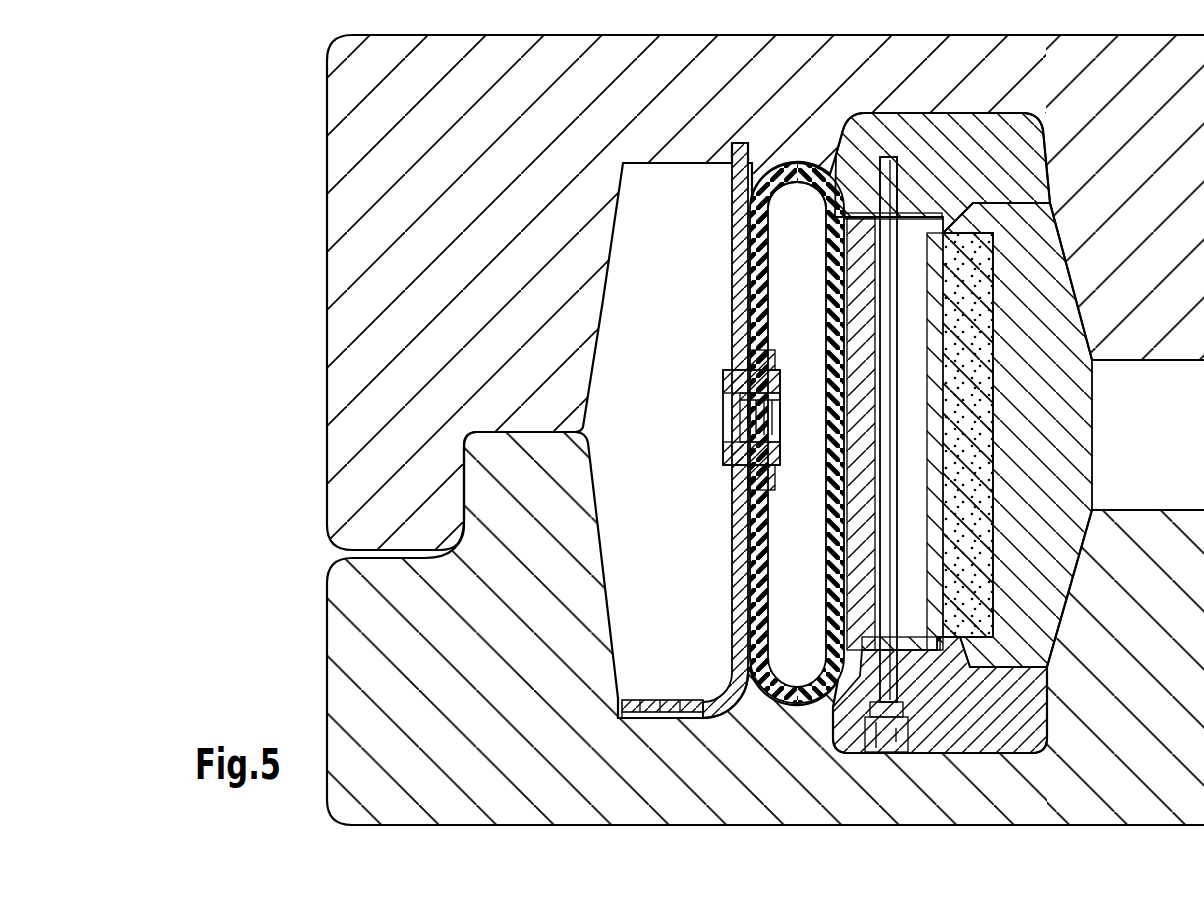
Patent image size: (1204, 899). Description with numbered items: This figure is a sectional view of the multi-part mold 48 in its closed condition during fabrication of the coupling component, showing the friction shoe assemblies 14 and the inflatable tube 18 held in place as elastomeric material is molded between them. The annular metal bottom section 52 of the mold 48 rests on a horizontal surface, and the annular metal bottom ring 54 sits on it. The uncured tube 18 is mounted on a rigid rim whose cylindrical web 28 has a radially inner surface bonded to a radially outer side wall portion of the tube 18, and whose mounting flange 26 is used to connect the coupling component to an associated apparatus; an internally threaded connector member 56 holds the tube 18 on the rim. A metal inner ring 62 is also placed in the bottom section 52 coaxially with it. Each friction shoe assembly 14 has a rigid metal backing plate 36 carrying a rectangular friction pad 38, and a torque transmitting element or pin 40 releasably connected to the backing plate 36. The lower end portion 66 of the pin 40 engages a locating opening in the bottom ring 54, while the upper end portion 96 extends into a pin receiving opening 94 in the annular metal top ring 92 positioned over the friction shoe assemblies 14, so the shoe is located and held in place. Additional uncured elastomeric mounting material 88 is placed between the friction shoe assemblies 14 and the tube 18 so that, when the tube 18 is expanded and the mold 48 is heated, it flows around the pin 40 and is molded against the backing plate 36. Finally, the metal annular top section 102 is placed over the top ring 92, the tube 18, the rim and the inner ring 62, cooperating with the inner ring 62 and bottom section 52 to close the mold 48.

The friction shoe assembly 14 is at (947, 220).
The inflatable tube 18 is at (807, 148).
The mounting flange 26 is at (665, 701).
The cylindrical web 28 is at (745, 287).
The backing plate 36 is at (947, 445).
The friction pad 38 is at (970, 418).
The torque transmitting element 40 is at (880, 580).
The multi-part mold 48 is at (452, 843).
The bottom section 52 is at (763, 793).
The bottom ring 54 is at (975, 720).
The connector member 56 is at (723, 455).
The inner ring 62 is at (1072, 485).
The lower end portion 66 is at (866, 655).
The elastomeric mounting material 88 is at (870, 340).
The top ring 92 is at (932, 140).
The pin receiving opening 94 is at (900, 155).
The upper end portion 96 is at (826, 192).
The top section 102 is at (512, 110).